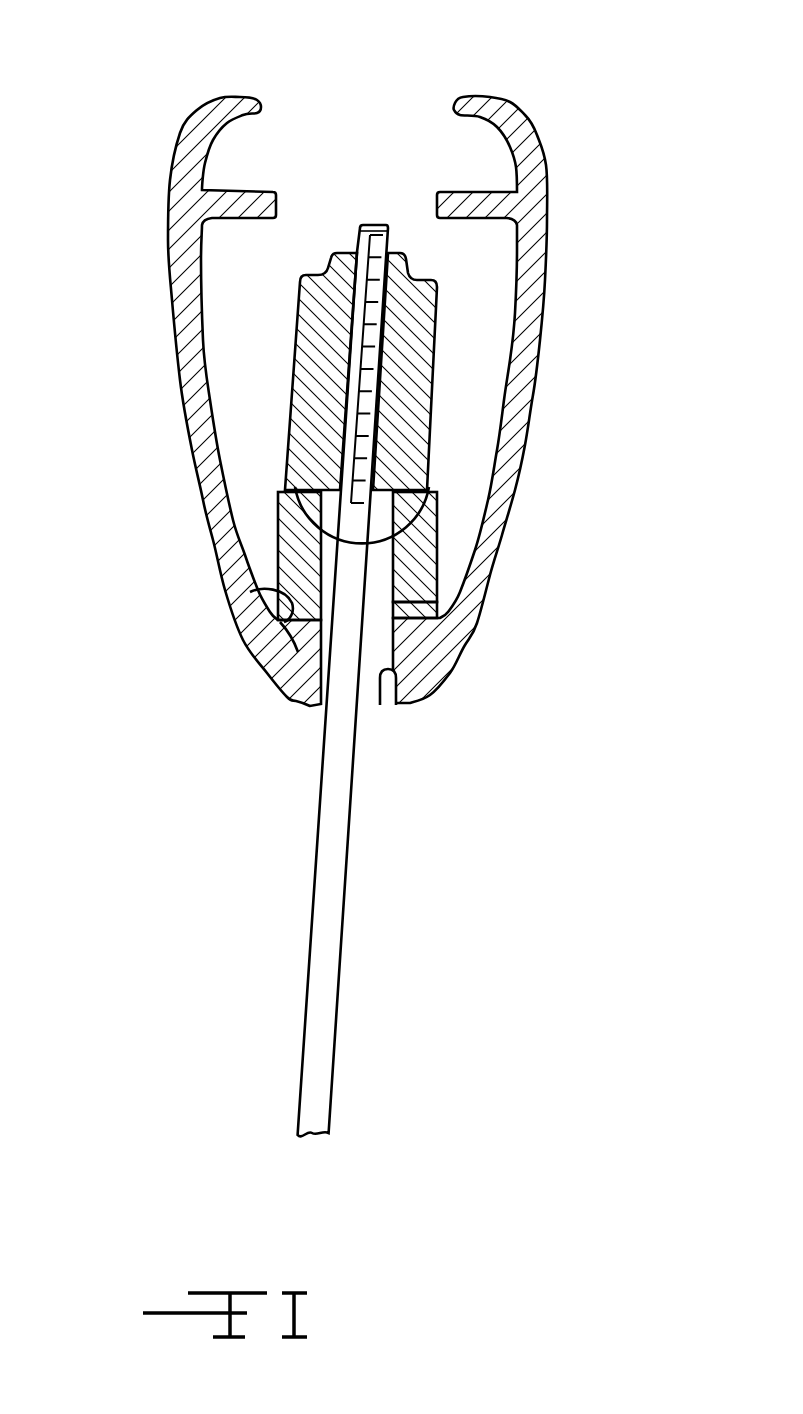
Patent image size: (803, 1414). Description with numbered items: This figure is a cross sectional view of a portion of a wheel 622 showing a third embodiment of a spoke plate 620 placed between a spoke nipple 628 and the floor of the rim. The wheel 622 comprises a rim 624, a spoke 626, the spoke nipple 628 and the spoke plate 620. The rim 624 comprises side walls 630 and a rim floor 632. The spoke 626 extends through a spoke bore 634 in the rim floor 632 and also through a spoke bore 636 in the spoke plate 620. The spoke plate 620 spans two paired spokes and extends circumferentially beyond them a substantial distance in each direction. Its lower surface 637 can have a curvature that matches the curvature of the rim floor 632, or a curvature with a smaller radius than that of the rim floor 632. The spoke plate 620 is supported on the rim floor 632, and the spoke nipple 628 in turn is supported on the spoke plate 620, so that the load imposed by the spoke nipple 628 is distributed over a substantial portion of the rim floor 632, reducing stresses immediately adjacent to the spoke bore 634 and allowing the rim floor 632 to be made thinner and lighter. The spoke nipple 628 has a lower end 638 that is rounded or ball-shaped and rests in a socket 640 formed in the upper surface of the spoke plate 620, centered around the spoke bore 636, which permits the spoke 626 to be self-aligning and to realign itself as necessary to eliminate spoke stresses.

The spoke plate 620 is at (438, 525).
The wheel 622 is at (495, 728).
The rim 624 is at (548, 350).
The spoke 626 is at (378, 224).
The spoke nipple 628 is at (440, 318).
The side walls 630 is at (527, 440).
The rim floor 632 is at (250, 592).
The spoke bore 634 is at (395, 672).
The spoke bore 636 is at (393, 573).
The lower surface 637 is at (310, 623).
The lower end 638 is at (300, 533).
The socket 640 is at (412, 480).